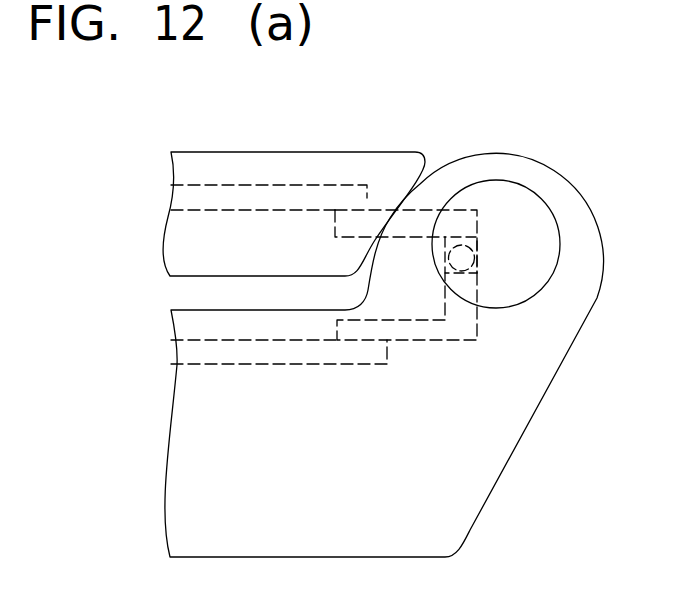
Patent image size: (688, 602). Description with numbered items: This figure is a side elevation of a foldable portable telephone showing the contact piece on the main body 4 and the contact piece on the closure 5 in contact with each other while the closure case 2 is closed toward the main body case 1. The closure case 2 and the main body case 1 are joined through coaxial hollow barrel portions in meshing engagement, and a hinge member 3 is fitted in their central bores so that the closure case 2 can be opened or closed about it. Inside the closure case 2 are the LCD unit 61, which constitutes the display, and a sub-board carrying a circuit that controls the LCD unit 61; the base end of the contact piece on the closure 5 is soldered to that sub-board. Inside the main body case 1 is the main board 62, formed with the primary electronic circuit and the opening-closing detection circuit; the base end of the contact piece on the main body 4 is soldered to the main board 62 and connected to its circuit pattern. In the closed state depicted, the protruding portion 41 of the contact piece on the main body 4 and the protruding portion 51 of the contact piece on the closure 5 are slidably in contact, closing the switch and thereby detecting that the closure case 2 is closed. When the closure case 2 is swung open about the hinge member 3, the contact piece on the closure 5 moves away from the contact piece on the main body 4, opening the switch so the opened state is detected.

The main body case 1 is at (532, 388).
The closure case 2 is at (302, 165).
The hinge member 3 is at (530, 223).
The contact piece on the main body 4 is at (433, 340).
The contact piece on the closure 5 is at (430, 208).
The protruding portion 41 is at (501, 299).
The protruding portion 51 is at (480, 252).
The LCD unit 61 is at (230, 185).
The main board 62 is at (250, 364).